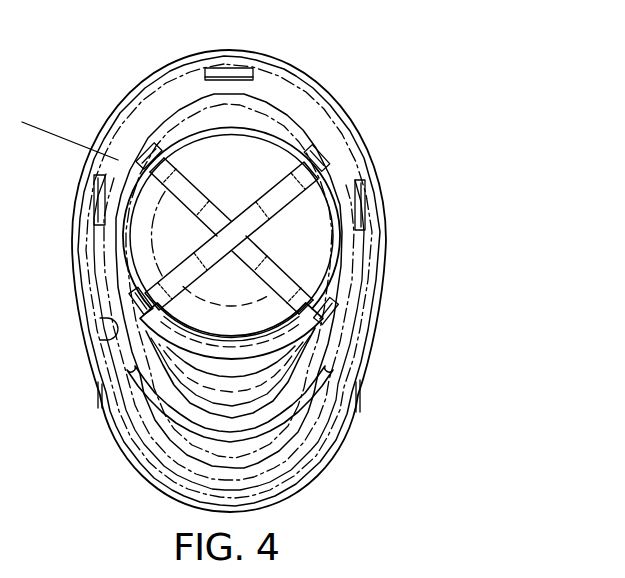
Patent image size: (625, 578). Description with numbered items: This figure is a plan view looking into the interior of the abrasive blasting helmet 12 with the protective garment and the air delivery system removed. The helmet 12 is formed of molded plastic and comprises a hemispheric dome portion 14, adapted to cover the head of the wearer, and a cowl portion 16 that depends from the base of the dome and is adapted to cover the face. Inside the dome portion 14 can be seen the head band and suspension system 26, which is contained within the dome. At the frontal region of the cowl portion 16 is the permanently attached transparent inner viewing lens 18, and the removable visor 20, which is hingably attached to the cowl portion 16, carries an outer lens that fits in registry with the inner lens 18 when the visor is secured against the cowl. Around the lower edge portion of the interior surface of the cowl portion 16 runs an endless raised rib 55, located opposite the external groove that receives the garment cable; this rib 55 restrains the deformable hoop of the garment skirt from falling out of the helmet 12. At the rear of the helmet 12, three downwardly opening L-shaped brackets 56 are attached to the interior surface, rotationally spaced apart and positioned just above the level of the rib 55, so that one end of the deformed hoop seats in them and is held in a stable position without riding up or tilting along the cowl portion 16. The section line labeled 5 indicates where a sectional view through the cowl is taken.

The section line 5- 5 is at (55, 137).
The abrasive blasting helmet 12 is at (392, 156).
The hemispheric dome portion 14 is at (285, 103).
The cowl portion 16 is at (373, 332).
The inner viewing lens 18 is at (262, 428).
The removable visor 20 is at (343, 442).
The head band and suspension system 26 is at (277, 262).
The endless raised rib 55 is at (100, 328).
The L-shaped brackets 56 is at (224, 69).